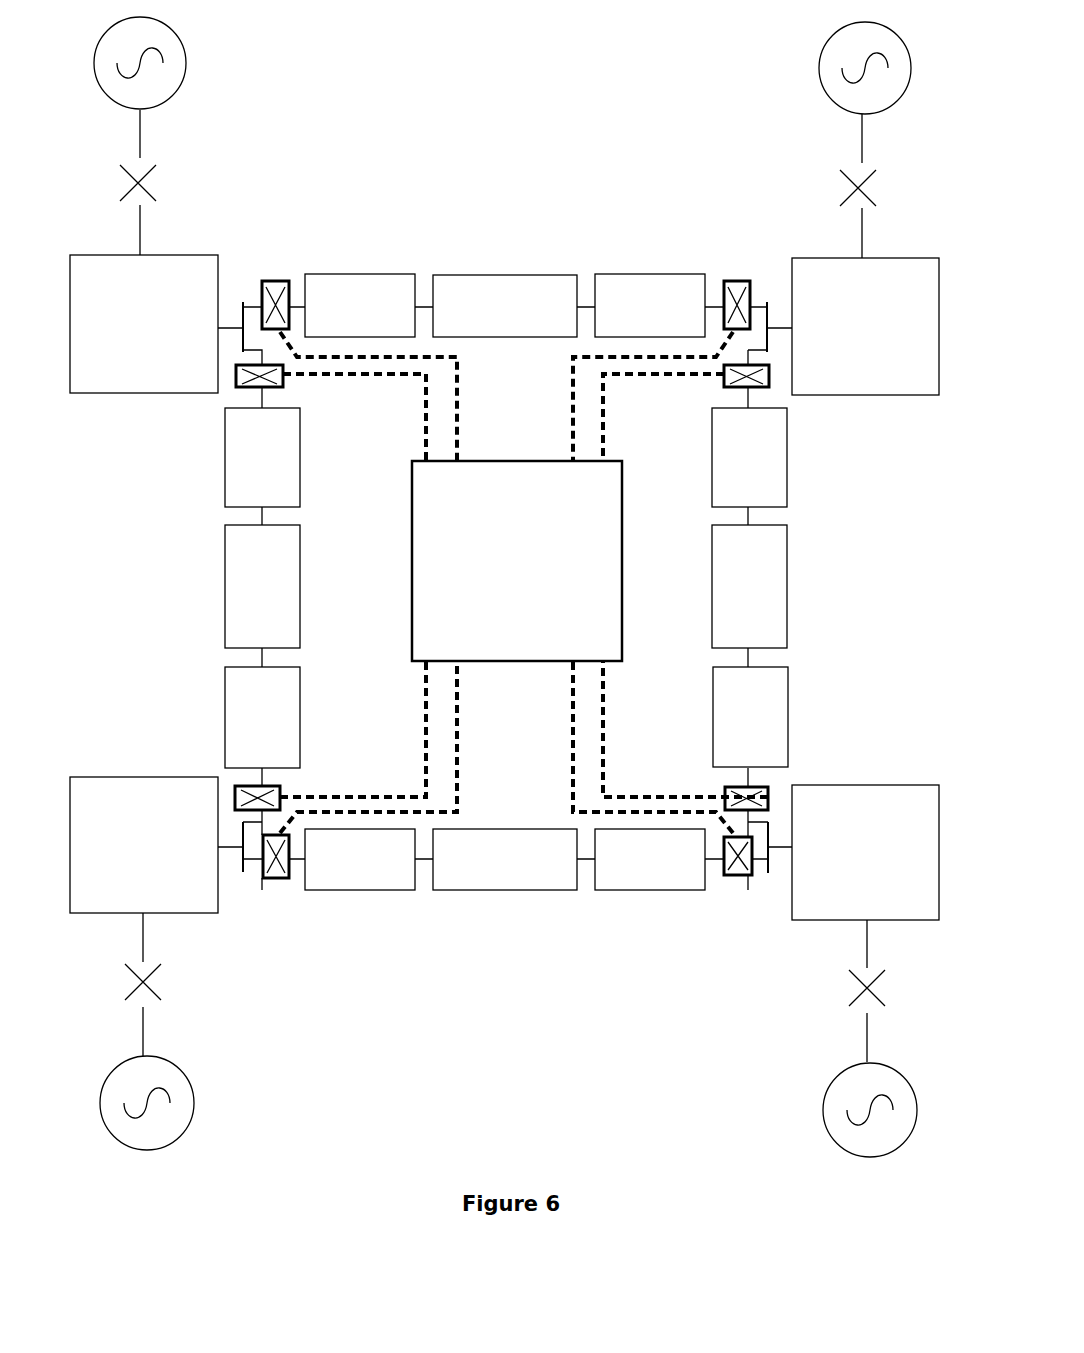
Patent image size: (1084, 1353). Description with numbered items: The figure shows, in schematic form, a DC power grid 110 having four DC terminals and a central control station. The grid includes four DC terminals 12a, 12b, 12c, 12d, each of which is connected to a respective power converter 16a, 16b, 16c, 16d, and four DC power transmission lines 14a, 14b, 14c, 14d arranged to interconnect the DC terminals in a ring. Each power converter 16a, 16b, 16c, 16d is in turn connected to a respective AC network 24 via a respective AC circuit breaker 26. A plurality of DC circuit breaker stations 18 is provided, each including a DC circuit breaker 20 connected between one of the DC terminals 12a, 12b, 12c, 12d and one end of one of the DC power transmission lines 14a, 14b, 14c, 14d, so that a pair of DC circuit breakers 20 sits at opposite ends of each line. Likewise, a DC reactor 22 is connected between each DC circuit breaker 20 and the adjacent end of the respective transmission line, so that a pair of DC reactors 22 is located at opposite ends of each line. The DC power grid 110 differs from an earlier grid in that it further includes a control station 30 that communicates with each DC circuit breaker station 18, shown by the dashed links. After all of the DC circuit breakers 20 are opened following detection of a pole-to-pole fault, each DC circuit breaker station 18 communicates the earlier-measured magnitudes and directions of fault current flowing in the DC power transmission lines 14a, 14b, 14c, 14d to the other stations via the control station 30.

The DC power grid 110 is at (490, 224).
The DC terminal 12a is at (240, 314).
The DC terminal 12b is at (243, 861).
The DC terminal 12c is at (767, 861).
The DC terminal 12d is at (770, 314).
The DC power transmission line 14a is at (262, 586).
The DC power transmission line 14b is at (505, 859).
The DC power transmission line 14c is at (749, 586).
The DC power transmission line 14d is at (505, 306).
The power converter 16a is at (144, 324).
The power converter 16b is at (144, 845).
The power converter 16c is at (865, 852).
The power converter 16d is at (865, 326).
The DC circuit breaker station 18 is at (274, 276).
The DC circuit breaker 20 is at (278, 300).
The DC reactor 22 is at (506, 582).
The AC network 24 is at (177, 62).
The AC circuit breaker 26 is at (160, 185).
The control station 30 is at (517, 561).